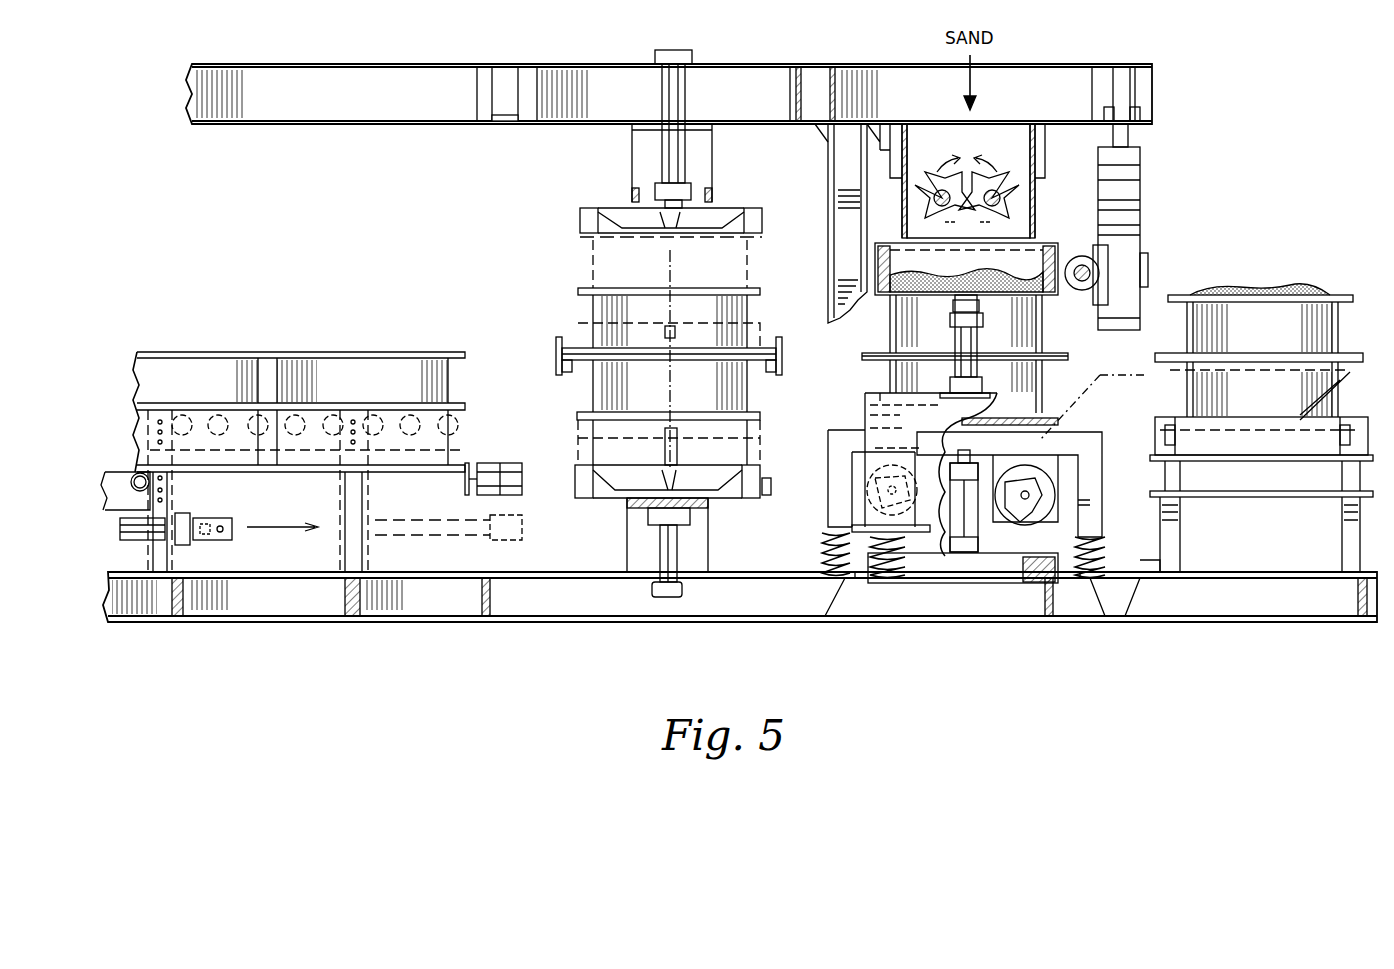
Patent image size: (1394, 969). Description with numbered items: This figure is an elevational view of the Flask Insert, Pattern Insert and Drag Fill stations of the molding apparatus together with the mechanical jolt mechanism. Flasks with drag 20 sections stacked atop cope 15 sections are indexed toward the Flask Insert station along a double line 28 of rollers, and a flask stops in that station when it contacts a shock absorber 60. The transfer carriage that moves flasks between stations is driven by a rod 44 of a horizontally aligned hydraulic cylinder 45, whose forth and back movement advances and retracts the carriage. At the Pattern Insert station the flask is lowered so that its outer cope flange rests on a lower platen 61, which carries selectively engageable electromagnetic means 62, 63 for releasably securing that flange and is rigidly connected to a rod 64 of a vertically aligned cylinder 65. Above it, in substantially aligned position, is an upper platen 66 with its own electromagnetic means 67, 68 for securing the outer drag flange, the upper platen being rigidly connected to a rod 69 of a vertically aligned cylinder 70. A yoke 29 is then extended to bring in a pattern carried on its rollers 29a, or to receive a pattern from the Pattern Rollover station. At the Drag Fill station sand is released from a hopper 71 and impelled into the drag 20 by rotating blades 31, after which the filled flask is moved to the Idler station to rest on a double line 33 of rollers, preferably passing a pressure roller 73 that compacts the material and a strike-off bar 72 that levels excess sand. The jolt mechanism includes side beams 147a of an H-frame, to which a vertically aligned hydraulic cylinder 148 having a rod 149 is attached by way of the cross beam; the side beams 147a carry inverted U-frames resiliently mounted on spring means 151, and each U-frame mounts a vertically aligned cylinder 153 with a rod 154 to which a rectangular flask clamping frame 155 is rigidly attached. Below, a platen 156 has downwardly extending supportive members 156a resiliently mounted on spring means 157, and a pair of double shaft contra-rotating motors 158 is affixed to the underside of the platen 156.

The cope section 15 is at (1215, 388).
The drag section 20 is at (757, 343).
The double line of rollers 28 is at (270, 430).
The yoke 29 is at (556, 356).
The rollers 29a is at (568, 372).
The rotating blades 31 is at (1018, 204).
The double line of rollers 33 is at (1340, 430).
The rod 44 is at (452, 528).
The hydraulic cylinder 45 is at (135, 540).
The shock absorber 60 is at (490, 466).
The lower platen 61 is at (712, 490).
The electromagnetic means 62 is at (575, 480).
The electromagnetic means 63 is at (760, 472).
The rod 64 is at (660, 500).
The cylinder 65 is at (672, 565).
The upper platen 66 is at (714, 222).
The electromagnetic means 67 is at (580, 220).
The electromagnetic means 68 is at (763, 219).
The rod 69 is at (708, 210).
The cylinder 70 is at (683, 88).
The hopper 71 is at (1010, 155).
The strike-off bar 72 is at (1148, 270).
The pressure roller 73 is at (1082, 256).
The side beams 147a is at (960, 577).
The hydraulic cylinder 148 is at (963, 568).
The rod 149 is at (968, 468).
The spring means 151 is at (887, 565).
The cylinder 153 is at (975, 328).
The rod 154 is at (980, 306).
The flask clamping frame 155 is at (880, 243).
The platen 156 is at (1085, 436).
The supportive members 156a is at (830, 490).
The spring means 157 is at (838, 545).
The double shaft contra-rotating motors 158 is at (1032, 520).